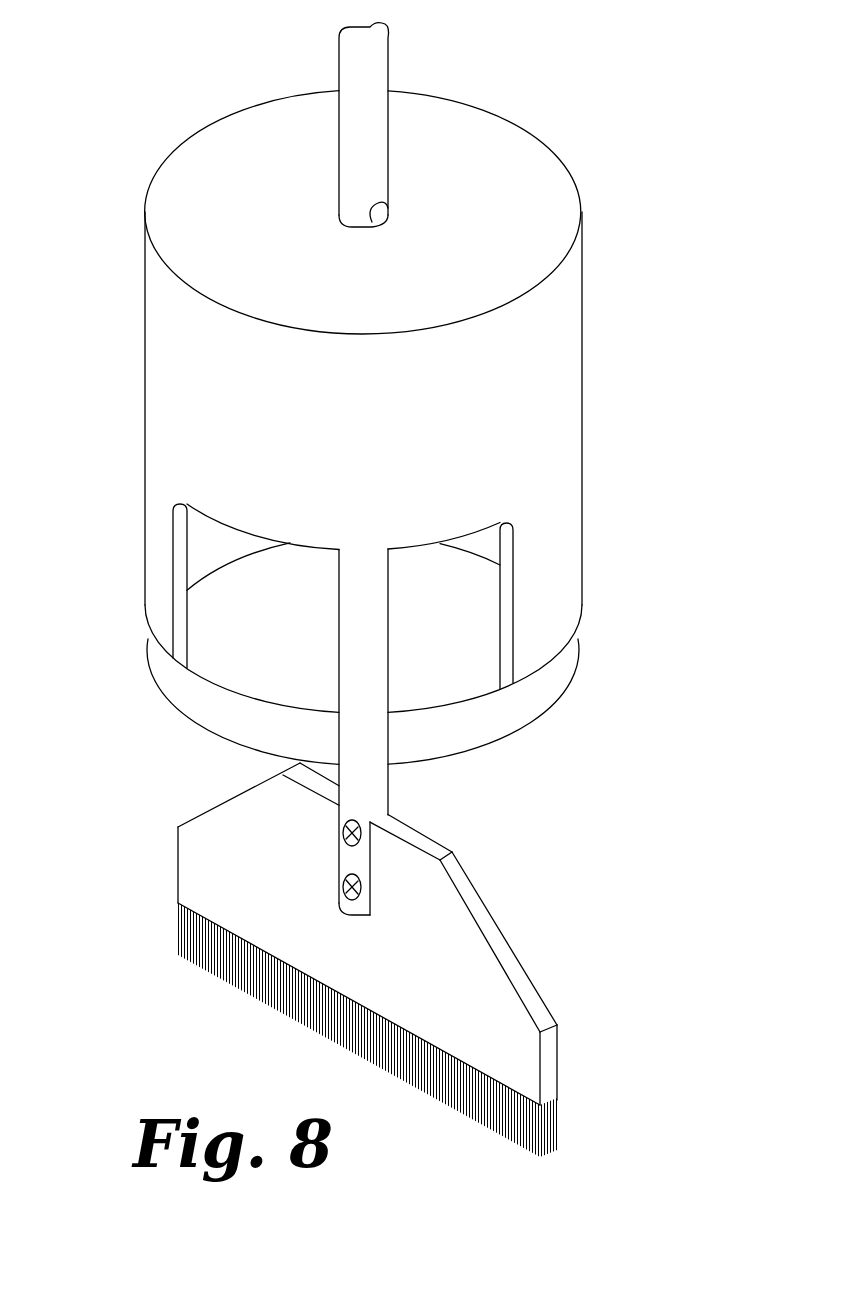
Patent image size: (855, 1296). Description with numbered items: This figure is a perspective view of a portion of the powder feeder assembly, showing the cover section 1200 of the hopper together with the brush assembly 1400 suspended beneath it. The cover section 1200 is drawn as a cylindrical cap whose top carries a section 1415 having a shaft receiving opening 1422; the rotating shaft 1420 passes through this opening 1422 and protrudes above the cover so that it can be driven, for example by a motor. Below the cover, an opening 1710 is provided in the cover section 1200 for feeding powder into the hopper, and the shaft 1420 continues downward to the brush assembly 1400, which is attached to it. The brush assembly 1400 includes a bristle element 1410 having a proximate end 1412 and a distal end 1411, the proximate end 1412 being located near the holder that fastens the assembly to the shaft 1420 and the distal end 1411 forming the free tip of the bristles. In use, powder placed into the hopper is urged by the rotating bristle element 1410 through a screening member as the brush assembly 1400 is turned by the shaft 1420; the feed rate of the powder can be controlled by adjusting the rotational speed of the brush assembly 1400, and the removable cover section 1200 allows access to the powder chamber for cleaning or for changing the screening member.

The cover section 1200 is at (588, 339).
The section 1415 is at (553, 188).
The rotating shaft 1420 is at (375, 58).
The shaft receiving opening 1422 is at (371, 216).
The opening 1710 is at (248, 663).
The brush assembly 1400 is at (160, 864).
The proximate end 1412 is at (558, 1098).
The bristle element 1410 is at (550, 1128).
The distal end 1411 is at (543, 1137).